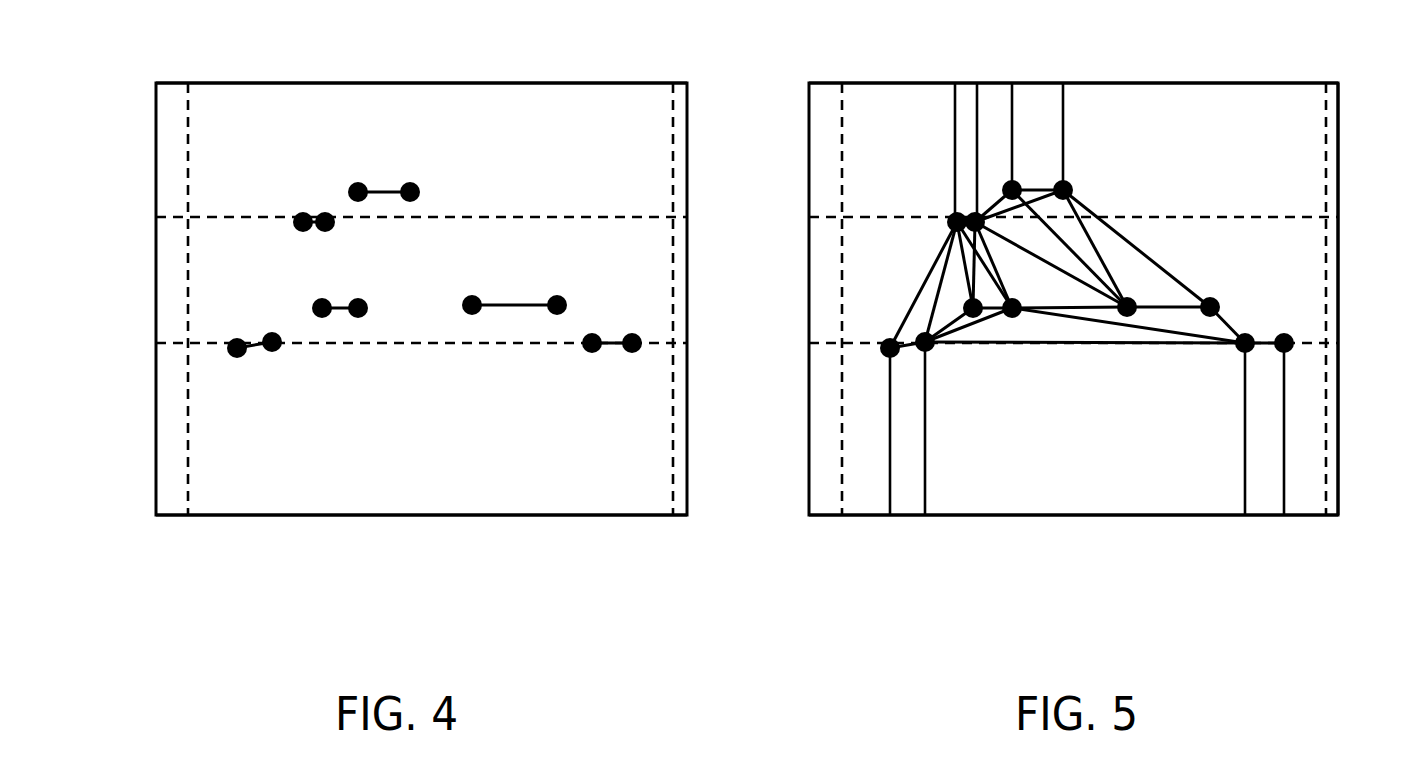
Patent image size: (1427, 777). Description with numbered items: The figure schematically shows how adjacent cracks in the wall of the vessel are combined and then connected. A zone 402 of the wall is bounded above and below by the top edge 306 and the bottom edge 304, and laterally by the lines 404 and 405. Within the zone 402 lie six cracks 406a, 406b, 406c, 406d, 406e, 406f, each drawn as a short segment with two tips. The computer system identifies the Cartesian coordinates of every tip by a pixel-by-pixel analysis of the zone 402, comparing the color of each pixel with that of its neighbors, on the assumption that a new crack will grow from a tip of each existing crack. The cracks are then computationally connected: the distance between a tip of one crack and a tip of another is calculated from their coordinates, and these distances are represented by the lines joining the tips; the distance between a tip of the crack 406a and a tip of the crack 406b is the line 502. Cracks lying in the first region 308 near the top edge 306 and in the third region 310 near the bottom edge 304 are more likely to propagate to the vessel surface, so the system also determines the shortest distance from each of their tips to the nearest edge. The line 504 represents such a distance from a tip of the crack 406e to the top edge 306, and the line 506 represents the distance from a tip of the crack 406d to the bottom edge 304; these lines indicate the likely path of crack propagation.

In FIG. 4, the zone 402 is at (278, 110).
In FIG. 5, the zone 402 is at (901, 108).
In FIG. 4, the line 404 is at (188, 166).
In FIG. 5, the line 404 is at (842, 188).
In FIG. 4, the line 405 is at (673, 148).
In FIG. 5, the line 405 is at (1326, 148).
In FIG. 4, the top edge 306 is at (573, 83).
In FIG. 5, the top edge 306 is at (1226, 83).
In FIG. 4, the bottom edge 304 is at (603, 515).
In FIG. 5, the bottom edge 304 is at (1257, 515).
In FIG. 5, the first region 308 is at (1292, 108).
In FIG. 5, the third region 310 is at (1200, 435).
In FIG. 4, the crack 406a is at (252, 350).
In FIG. 5, the crack 406a is at (905, 348).
In FIG. 4, the crack 406b is at (340, 306).
In FIG. 5, the crack 406b is at (993, 307).
In FIG. 4, the crack 406c is at (512, 304).
In FIG. 5, the crack 406c is at (1162, 305).
In FIG. 4, the crack 406d is at (614, 348).
In FIG. 5, the crack 406d is at (1242, 335).
In FIG. 4, the crack 406e is at (383, 190).
In FIG. 5, the crack 406e is at (1035, 188).
In FIG. 4, the crack 406f is at (297, 230).
In FIG. 5, the crack 406f is at (950, 230).
In FIG. 5, the distance line 502 is at (960, 330).
In FIG. 5, the distance line 504 is at (977, 95).
In FIG. 5, the distance line 506 is at (1245, 478).